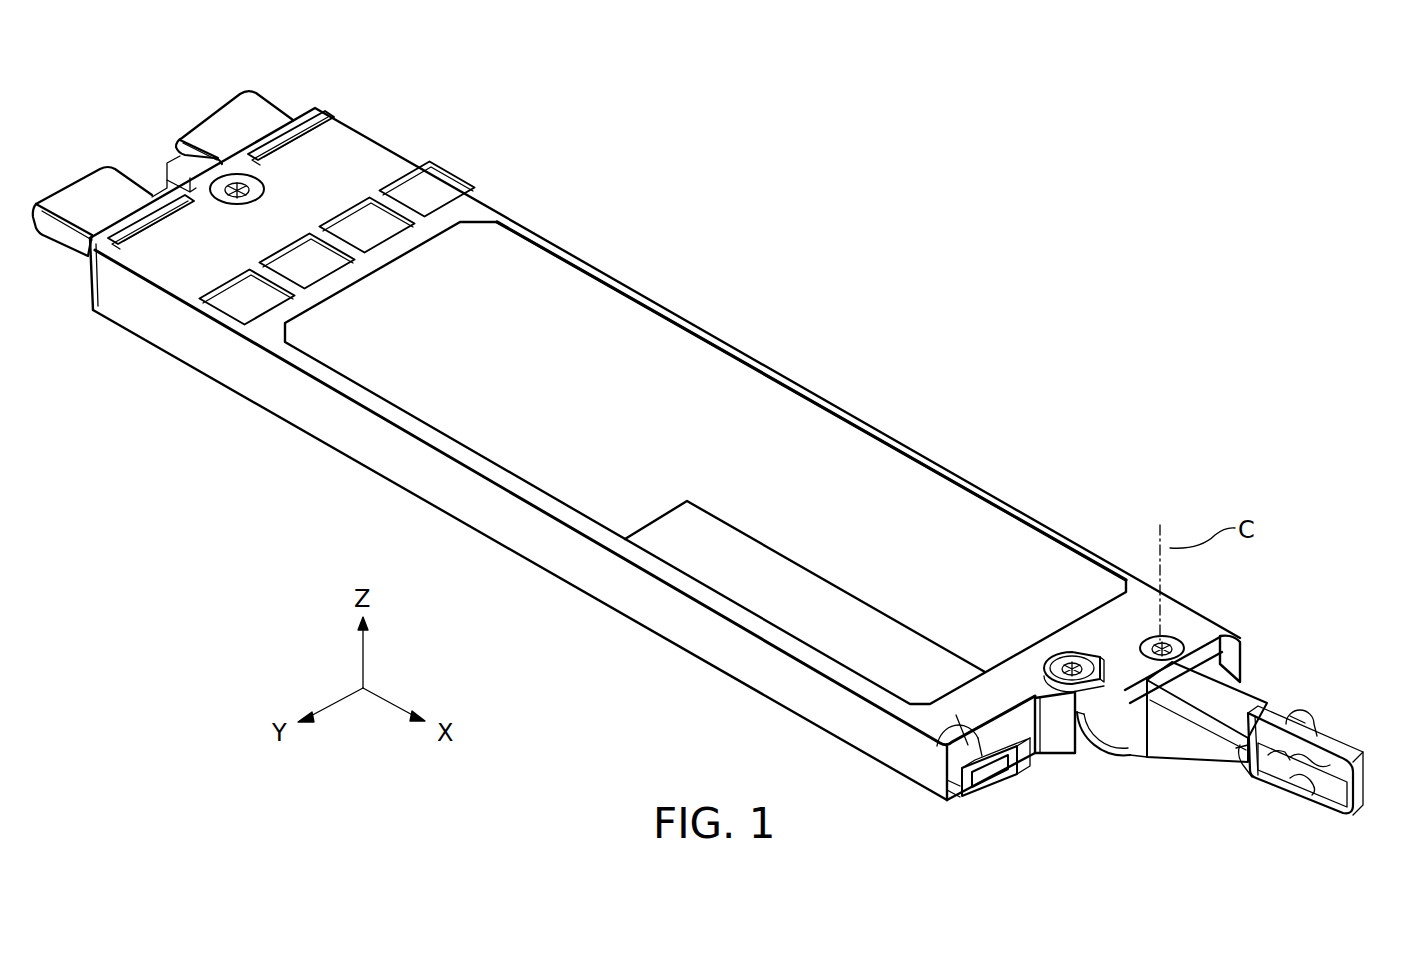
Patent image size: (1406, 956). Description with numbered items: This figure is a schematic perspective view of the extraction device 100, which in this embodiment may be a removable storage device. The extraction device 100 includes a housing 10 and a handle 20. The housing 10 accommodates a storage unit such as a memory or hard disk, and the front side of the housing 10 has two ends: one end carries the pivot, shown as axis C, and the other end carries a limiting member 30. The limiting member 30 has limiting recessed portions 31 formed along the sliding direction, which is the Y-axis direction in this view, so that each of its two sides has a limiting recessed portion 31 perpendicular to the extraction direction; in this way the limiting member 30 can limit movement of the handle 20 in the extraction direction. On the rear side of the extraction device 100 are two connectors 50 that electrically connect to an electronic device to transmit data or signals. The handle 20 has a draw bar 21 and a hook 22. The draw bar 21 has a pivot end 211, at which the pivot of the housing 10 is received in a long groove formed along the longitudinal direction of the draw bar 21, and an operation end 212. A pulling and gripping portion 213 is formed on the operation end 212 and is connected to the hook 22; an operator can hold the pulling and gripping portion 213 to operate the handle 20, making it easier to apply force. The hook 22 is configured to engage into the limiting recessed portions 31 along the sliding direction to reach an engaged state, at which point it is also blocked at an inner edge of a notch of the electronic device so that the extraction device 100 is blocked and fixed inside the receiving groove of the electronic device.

The extraction device 100 is at (958, 322).
The housing 10 is at (750, 355).
The connectors 50 is at (225, 124).
The handle 20 is at (1276, 703).
The draw bar 21 is at (1242, 697).
The pivot end 211 is at (1133, 712).
The operation end 212 is at (1240, 748).
The pulling and gripping portion 213 is at (1300, 727).
The hook 22 is at (1347, 790).
The limiting member 30 is at (993, 793).
The limiting recessed portion 31 is at (957, 718).